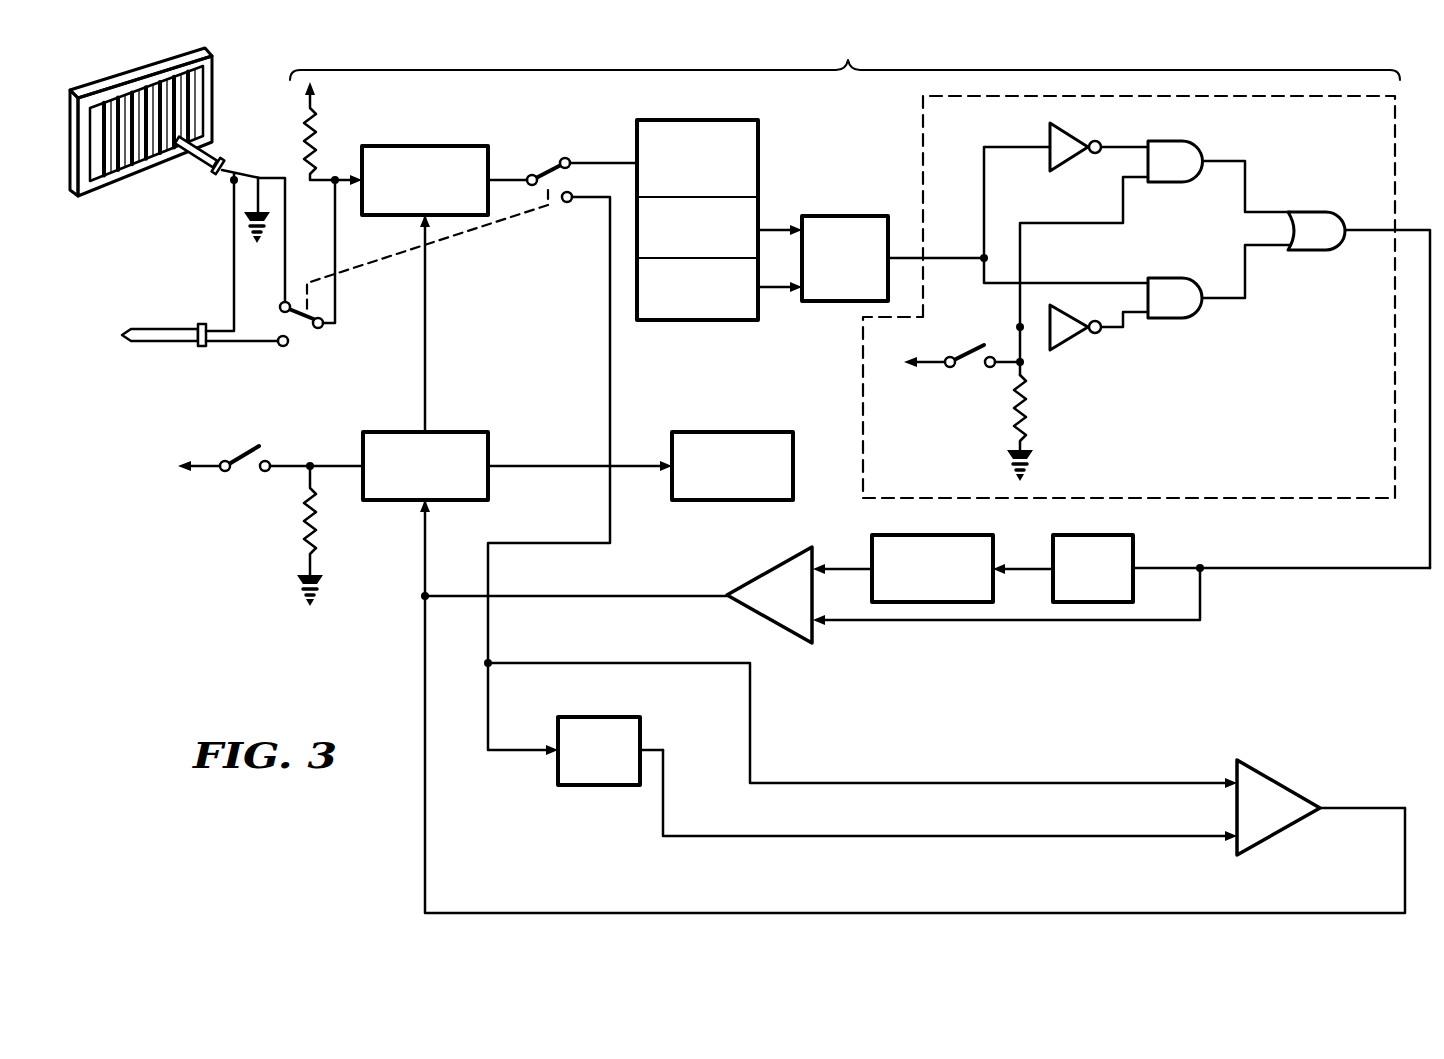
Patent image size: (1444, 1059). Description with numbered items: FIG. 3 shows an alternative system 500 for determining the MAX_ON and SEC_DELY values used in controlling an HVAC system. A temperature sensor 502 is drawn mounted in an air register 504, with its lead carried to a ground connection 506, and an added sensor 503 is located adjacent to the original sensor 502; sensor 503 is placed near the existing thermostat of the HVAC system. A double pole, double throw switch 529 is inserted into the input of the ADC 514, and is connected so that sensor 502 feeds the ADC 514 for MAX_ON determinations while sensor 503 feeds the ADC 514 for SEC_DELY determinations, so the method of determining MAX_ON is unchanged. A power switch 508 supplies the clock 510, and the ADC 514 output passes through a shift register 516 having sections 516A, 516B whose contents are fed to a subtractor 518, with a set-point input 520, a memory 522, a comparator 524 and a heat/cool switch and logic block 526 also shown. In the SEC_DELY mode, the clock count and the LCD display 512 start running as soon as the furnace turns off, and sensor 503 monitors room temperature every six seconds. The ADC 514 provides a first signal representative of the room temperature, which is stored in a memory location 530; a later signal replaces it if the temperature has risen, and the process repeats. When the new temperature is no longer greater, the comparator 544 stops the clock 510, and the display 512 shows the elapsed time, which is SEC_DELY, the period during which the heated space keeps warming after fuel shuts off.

The thermostat control circuit 500 is at (190, 556).
The sensor 502 is at (193, 156).
The sensor 503 is at (163, 364).
The air register grille 504 is at (130, 164).
The sensor ground connection 506 is at (225, 180).
The power switch 508 is at (246, 445).
The clock 510 is at (473, 442).
The LCD display 512 is at (732, 440).
The ADC 514 is at (460, 158).
The shift register 516 is at (758, 142).
The first shift register section 516A is at (722, 241).
The second shift register section 516B is at (722, 299).
The subtractor 518 is at (856, 222).
The setpoint input 520 is at (1113, 580).
The memory 522 is at (895, 535).
The comparator 524 is at (785, 566).
The heat/cool switch and logic 526 is at (1288, 456).
The double pole, double throw switch 529 is at (315, 343).
The memory location 530 is at (620, 765).
The comparator 544 is at (1278, 788).